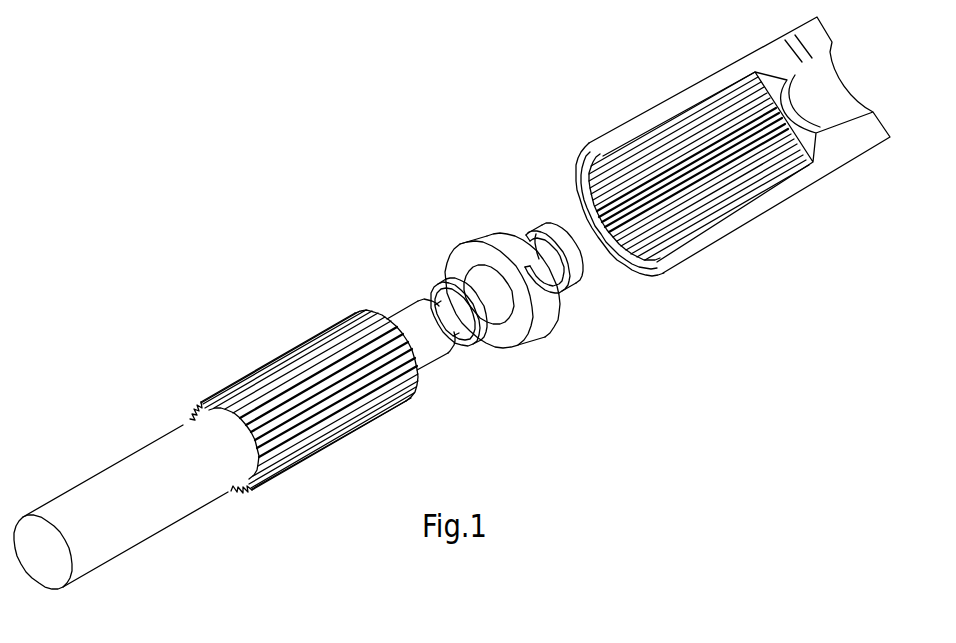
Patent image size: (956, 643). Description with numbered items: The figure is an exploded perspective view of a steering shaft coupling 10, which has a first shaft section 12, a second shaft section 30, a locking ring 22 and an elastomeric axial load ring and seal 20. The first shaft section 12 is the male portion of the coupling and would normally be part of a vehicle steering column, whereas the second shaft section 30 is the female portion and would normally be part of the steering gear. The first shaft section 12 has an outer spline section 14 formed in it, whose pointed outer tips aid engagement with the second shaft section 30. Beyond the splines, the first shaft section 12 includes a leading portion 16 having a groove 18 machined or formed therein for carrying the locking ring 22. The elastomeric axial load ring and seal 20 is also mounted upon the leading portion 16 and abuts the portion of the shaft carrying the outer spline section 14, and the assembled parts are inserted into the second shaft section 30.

The steering shaft coupling 10 is at (422, 218).
The first shaft section 12 is at (238, 362).
The outer spline section 14 is at (292, 248).
The leading portion 16 is at (430, 370).
The groove 18 is at (418, 297).
The elastomeric axial load ring and seal 20 is at (517, 354).
The locking ring 22 is at (580, 305).
The second shaft section 30 is at (710, 265).